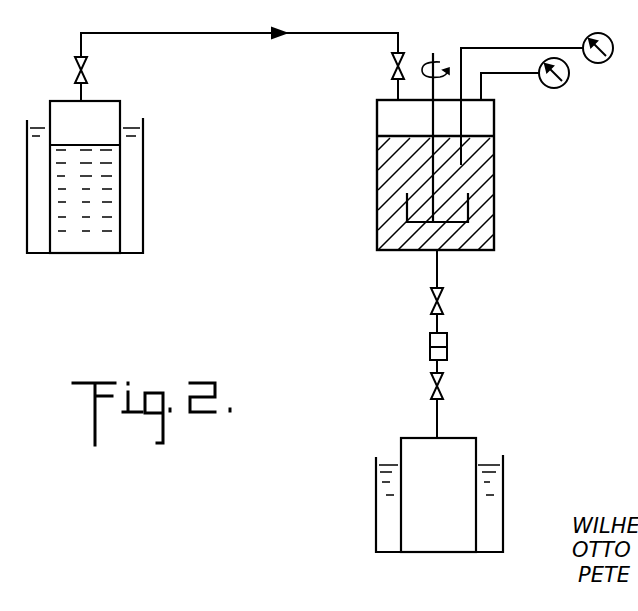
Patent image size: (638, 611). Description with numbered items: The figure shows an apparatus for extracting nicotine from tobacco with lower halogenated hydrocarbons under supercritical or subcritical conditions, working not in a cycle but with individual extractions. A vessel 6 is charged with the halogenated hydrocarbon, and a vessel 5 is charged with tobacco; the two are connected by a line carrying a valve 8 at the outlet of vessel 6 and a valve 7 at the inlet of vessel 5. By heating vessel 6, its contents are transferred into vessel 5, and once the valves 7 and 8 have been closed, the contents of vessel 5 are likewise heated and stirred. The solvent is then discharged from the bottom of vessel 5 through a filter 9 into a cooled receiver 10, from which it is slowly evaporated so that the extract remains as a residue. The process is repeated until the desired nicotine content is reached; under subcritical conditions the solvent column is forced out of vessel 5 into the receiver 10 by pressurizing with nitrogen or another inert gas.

The vessel 5 is at (494, 181).
The vessel 6 is at (120, 190).
The valve 7 is at (392, 58).
The valve 8 is at (88, 63).
The filter 9 is at (448, 345).
The receiver 10 is at (505, 478).